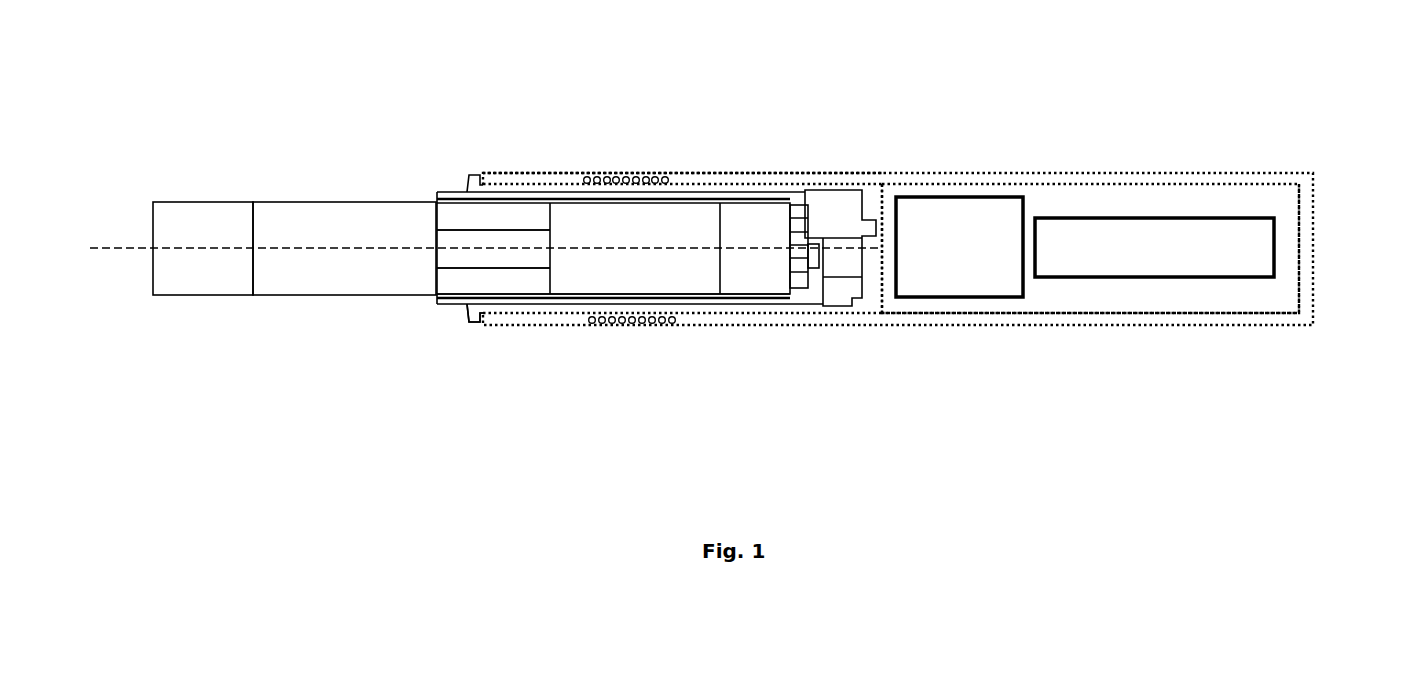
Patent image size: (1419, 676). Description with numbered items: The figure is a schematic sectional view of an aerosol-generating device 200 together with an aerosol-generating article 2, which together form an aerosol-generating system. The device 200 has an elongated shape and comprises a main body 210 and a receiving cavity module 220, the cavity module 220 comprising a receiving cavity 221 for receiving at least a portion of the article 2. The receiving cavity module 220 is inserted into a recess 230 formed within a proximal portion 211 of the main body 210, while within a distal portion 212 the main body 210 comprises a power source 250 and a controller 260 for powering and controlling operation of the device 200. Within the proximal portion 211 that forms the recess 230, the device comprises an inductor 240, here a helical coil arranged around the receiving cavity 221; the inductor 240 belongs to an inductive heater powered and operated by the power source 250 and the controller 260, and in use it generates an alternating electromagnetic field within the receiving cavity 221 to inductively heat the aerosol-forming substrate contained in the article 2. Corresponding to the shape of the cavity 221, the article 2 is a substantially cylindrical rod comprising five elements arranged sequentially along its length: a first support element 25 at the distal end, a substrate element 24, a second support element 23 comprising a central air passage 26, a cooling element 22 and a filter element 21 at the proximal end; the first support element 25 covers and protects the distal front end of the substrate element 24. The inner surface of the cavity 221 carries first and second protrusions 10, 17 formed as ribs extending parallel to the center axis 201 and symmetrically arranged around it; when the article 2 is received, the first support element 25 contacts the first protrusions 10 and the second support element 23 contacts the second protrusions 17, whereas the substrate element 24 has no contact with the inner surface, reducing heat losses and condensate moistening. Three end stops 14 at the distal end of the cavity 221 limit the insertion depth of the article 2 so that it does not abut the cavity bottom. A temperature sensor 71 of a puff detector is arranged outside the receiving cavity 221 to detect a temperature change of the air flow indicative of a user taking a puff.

The aerosol-generating article 2 is at (294, 263).
The first protrusions 10 is at (746, 300).
The end stops 14 is at (798, 233).
The second protrusions 17 is at (467, 303).
The filter element 21 is at (221, 240).
The cooling element 22 is at (332, 240).
The second support element 23 is at (473, 217).
The substrate element 24 is at (662, 238).
The first support element 25 is at (748, 227).
The central air passage 26 is at (498, 240).
The temperature sensor 71 is at (817, 263).
The aerosol-generating device 200 is at (946, 270).
The center axis 201 is at (136, 248).
The main body 210 is at (1090, 275).
The proximal portion 211 is at (682, 270).
The distal portion 212 is at (1167, 362).
The receiving cavity module 220 is at (621, 247).
The receiving cavity 221 is at (858, 193).
The recess 230 is at (877, 315).
The inductor 240 is at (632, 180).
The power source 250 is at (1173, 242).
The controller 260 is at (980, 223).